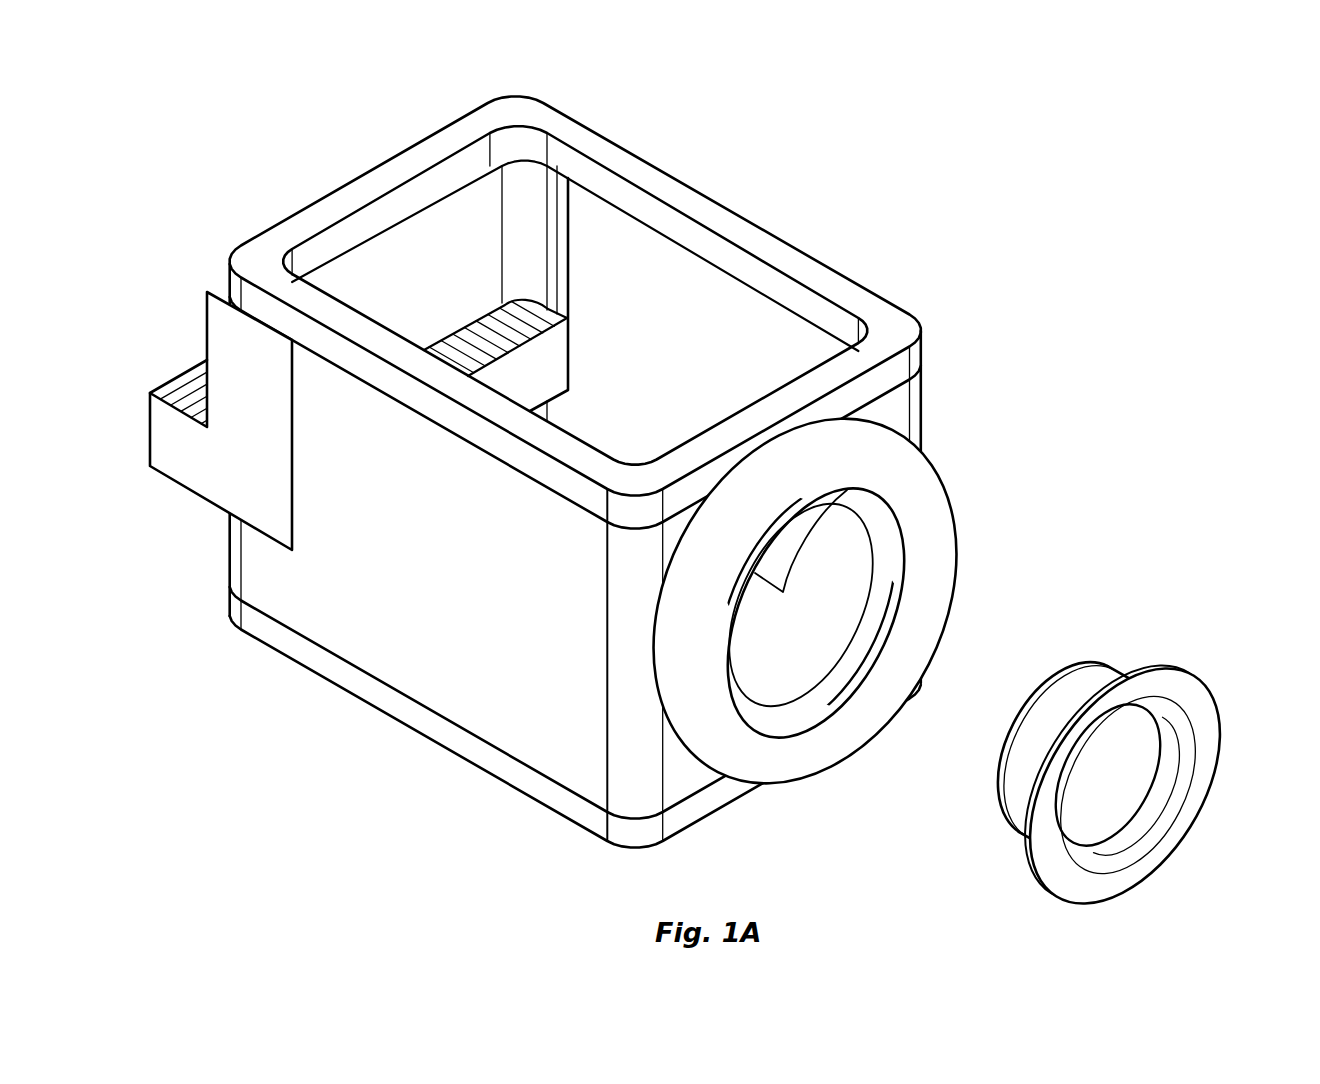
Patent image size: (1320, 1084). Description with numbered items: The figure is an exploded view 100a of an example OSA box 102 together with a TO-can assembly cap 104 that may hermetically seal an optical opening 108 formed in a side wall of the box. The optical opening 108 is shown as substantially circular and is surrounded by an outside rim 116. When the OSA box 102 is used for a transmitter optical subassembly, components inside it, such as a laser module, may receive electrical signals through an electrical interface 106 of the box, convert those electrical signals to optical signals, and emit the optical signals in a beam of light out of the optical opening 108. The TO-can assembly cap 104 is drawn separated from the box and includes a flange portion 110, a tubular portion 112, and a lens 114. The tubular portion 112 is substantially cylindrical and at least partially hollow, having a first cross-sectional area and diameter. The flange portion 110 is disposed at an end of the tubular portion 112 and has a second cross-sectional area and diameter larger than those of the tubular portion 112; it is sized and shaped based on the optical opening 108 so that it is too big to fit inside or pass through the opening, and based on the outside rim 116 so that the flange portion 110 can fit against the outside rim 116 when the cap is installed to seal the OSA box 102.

The exploded view 100a is at (691, 513).
The OSA box 102 is at (556, 469).
The TO-can assembly cap 104 is at (1139, 776).
The electrical interface 106 is at (530, 321).
The optical opening 108 is at (815, 601).
The flange portion 110 is at (1193, 697).
The tubular portion 112 is at (1074, 682).
The lens 114 is at (1123, 760).
The outside rim 116 is at (891, 573).